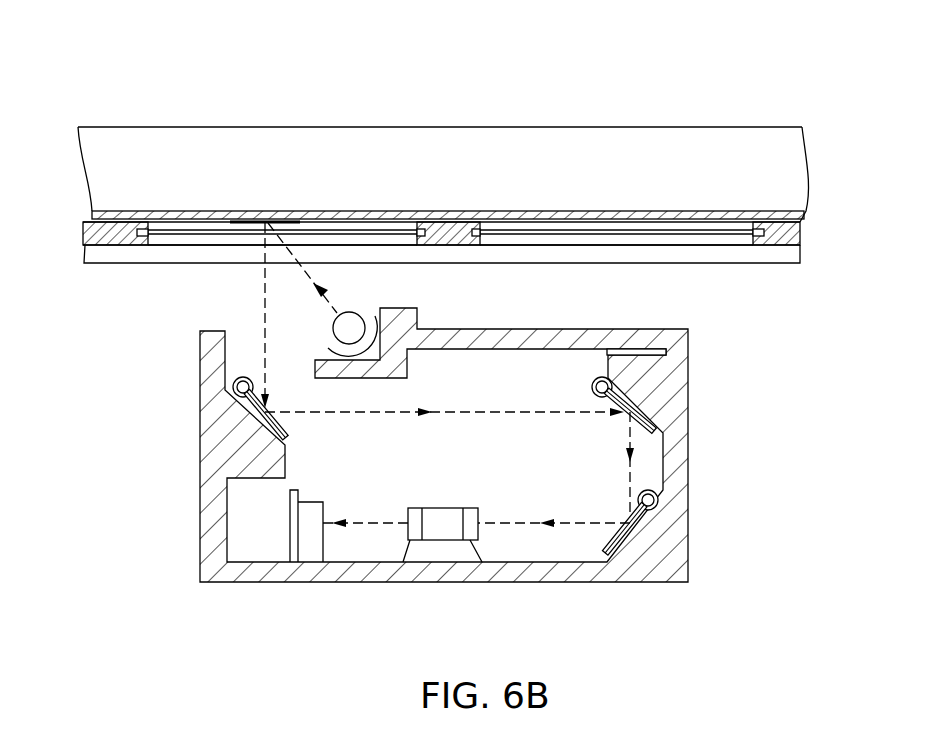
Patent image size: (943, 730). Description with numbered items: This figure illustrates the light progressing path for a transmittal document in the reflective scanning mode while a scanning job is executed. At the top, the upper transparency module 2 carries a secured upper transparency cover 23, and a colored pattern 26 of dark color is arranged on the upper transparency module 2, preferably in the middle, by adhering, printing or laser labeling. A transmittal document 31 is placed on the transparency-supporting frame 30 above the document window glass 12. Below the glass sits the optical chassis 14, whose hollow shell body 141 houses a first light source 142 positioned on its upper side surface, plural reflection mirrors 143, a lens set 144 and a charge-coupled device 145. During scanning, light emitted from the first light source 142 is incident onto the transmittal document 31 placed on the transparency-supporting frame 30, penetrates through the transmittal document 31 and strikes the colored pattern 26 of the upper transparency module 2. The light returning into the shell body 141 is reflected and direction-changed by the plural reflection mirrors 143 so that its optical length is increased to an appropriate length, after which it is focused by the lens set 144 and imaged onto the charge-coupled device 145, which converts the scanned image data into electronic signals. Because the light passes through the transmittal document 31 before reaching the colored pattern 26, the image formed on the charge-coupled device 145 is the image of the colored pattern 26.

The upper transparency module 2 is at (452, 180).
The document window glass 12 is at (528, 247).
The upper transparency cover 23 is at (804, 214).
The colored pattern 26 is at (235, 214).
The transparency-supporting frame 30 is at (83, 232).
The transmittal document 31 is at (172, 236).
The optical chassis 14 is at (427, 406).
The shell body 141 is at (205, 547).
The first light source 142 is at (350, 312).
The reflection mirrors 143 is at (232, 401).
The lens set 144 is at (433, 532).
The charge-coupled device 145 is at (312, 546).